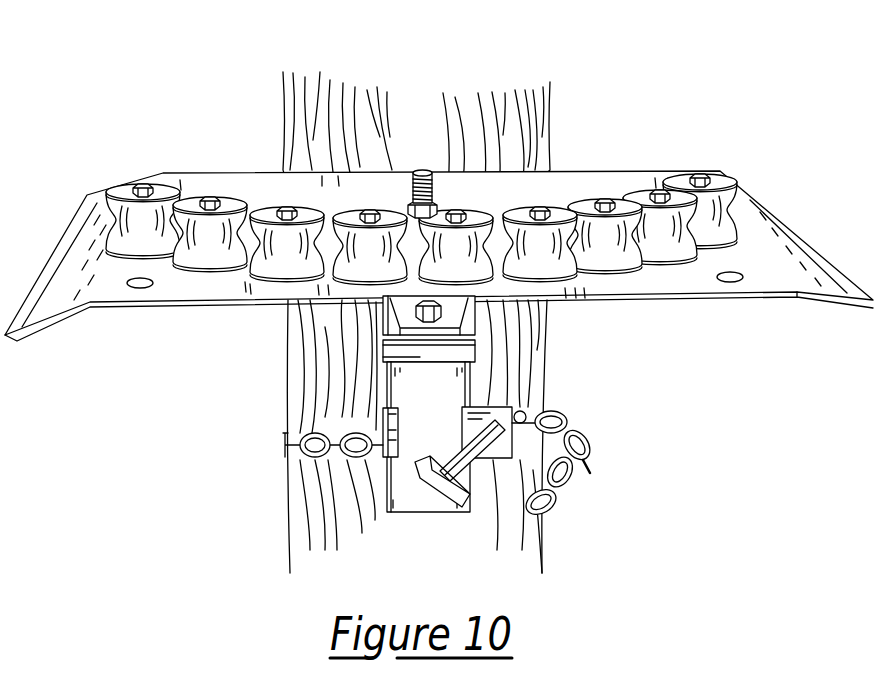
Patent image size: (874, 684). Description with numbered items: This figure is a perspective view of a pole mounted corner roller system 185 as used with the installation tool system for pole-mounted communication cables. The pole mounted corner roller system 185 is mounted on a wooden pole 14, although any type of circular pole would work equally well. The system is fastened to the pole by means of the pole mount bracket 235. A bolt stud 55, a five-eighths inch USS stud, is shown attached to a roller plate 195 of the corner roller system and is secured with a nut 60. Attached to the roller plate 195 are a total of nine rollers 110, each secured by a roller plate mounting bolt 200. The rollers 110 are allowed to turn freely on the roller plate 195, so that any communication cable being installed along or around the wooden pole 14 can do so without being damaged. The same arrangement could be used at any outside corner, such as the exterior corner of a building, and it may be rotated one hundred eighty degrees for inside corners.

The wooden pole 14 is at (318, 97).
The bolt stud 55 is at (431, 172).
The nut 60 is at (403, 202).
The rollers 110 is at (710, 213).
The pole mounted corner roller system 185 is at (439, 280).
The roller plate 195 is at (213, 287).
The roller plate mounting bolt 200 is at (548, 205).
The pole mount bracket 235 is at (470, 352).